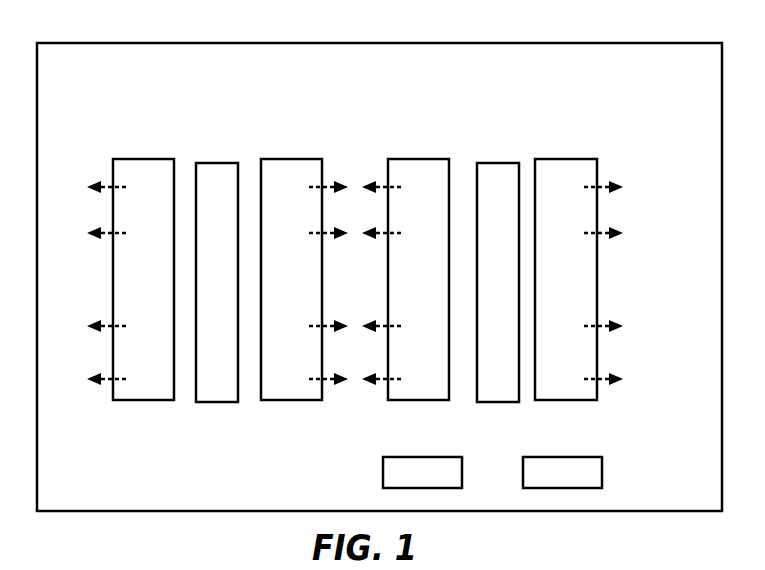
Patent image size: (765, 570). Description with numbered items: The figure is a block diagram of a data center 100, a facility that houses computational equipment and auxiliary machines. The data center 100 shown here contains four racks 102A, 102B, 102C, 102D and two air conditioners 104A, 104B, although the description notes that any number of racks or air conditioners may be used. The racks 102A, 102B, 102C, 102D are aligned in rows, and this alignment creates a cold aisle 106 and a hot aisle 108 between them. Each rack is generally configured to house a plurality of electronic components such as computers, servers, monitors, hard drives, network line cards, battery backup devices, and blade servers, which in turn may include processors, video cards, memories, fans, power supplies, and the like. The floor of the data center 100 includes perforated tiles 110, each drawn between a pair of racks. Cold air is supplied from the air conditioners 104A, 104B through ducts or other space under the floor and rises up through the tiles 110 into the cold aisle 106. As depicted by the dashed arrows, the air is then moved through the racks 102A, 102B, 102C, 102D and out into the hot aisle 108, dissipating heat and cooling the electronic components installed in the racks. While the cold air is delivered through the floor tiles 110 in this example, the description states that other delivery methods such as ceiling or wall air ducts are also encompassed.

The data center 100 is at (517, 43).
The rack 102A is at (147, 160).
The rack 102B is at (292, 159).
The rack 102C is at (420, 159).
The rack 102D is at (565, 159).
The air conditioner 104A is at (450, 457).
The air conditioner 104B is at (568, 457).
The cold aisle 106 is at (243, 113).
The hot aisle 108 is at (383, 113).
The perforated tile 110 is at (228, 404).